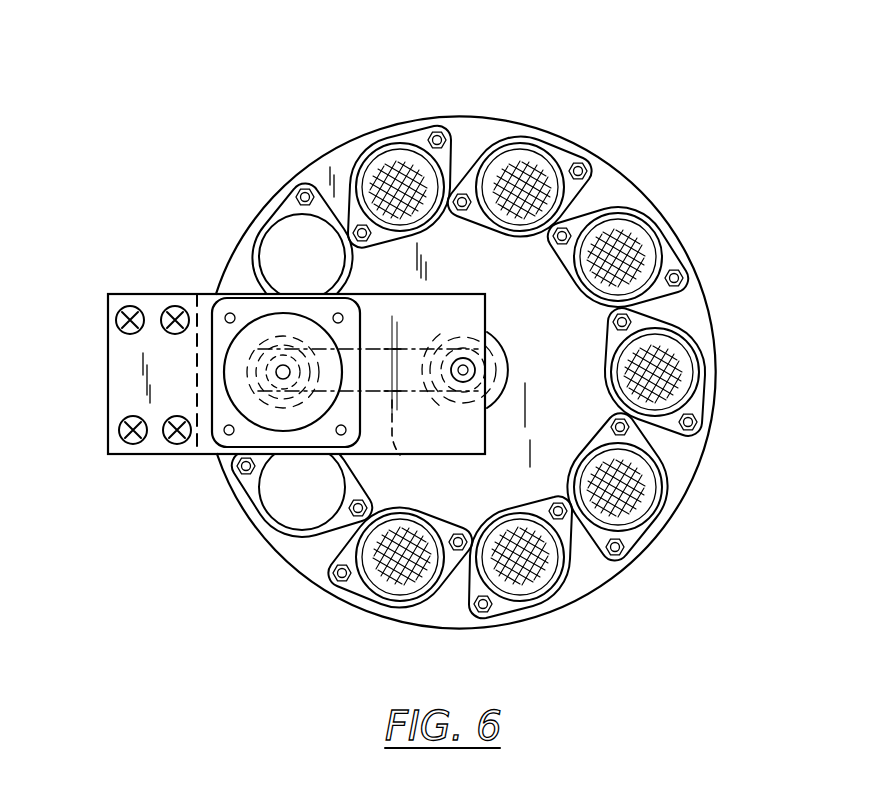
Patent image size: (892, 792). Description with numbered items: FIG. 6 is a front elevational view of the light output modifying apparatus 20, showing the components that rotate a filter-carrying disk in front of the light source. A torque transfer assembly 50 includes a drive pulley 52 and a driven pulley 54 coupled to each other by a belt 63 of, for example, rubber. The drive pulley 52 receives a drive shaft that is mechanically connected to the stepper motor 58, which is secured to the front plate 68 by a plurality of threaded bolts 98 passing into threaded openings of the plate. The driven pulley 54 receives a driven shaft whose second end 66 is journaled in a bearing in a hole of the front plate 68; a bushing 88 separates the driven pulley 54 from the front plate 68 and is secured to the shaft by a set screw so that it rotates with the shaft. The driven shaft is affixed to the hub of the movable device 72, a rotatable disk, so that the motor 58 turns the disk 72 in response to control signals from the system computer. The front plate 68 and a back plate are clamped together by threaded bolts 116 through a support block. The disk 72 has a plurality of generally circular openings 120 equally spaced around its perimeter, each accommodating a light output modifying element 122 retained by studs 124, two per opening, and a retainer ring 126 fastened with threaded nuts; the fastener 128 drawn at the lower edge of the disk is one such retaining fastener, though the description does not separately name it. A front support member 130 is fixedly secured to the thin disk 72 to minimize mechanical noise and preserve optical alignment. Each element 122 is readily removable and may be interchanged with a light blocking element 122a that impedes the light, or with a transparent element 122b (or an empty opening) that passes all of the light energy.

The light output modifying apparatus 20 is at (146, 212).
The torque transfer assembly 50 is at (370, 336).
The drive pulley 52 is at (272, 335).
The driven pulley 54 is at (493, 350).
The stepper motor 58 is at (225, 452).
The belt 63 is at (399, 444).
The second end of driven shaft 66 is at (468, 363).
The front plate 68 is at (138, 294).
The movable device 72 is at (668, 203).
The bushing 88 is at (466, 454).
The threaded bolts 98 is at (228, 313).
The threaded bolts 116 is at (176, 443).
The circular openings 120 is at (672, 316).
The light output modifying element 122 is at (637, 490).
The light blocking element 122a is at (290, 236).
The transparent element 122b is at (295, 513).
The studs 124 is at (463, 198).
The retainer ring 126 is at (606, 212).
The fastener 128 is at (350, 580).
The front support member 130 is at (509, 385).